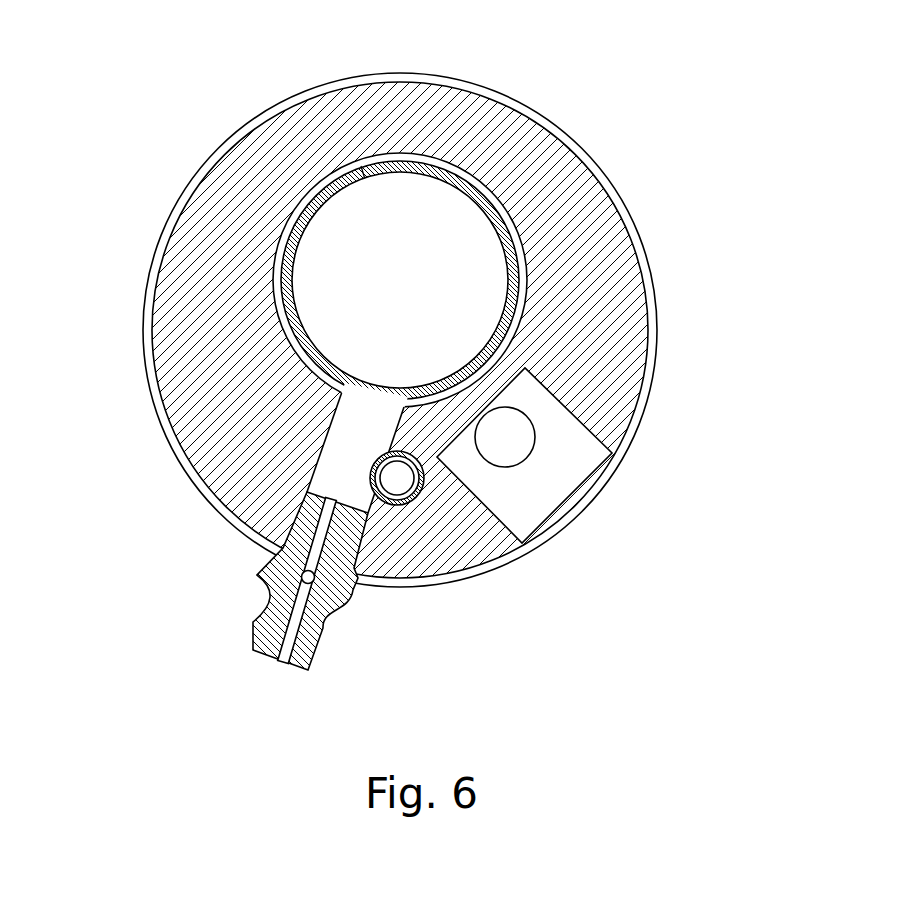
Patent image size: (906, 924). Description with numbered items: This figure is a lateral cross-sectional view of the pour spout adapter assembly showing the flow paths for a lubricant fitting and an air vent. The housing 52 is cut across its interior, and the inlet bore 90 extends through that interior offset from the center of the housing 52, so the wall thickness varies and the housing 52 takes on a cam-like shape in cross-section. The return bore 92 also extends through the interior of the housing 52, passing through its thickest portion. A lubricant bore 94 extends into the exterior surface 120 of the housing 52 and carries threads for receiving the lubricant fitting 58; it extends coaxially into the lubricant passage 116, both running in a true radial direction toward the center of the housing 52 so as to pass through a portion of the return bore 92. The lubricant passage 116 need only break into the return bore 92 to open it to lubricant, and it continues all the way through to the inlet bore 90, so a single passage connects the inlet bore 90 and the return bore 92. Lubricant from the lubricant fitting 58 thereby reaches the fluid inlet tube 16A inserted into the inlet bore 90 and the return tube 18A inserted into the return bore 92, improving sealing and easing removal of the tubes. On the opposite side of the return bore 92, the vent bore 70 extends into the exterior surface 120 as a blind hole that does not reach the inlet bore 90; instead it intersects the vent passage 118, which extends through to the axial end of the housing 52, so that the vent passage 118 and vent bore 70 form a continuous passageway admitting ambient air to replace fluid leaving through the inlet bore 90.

The housing 52 is at (529, 137).
The exterior surface 120 is at (658, 336).
The lubricant bore 94 is at (293, 520).
The fluid inlet tube 16A is at (297, 217).
The inlet bore 90 is at (337, 189).
The lubricant passage 116 is at (347, 458).
The vent passage 118 is at (524, 431).
The vent bore 70 is at (582, 432).
The return tube 18A is at (427, 481).
The return bore 92 is at (406, 506).
The lubricant fitting 58 is at (281, 635).